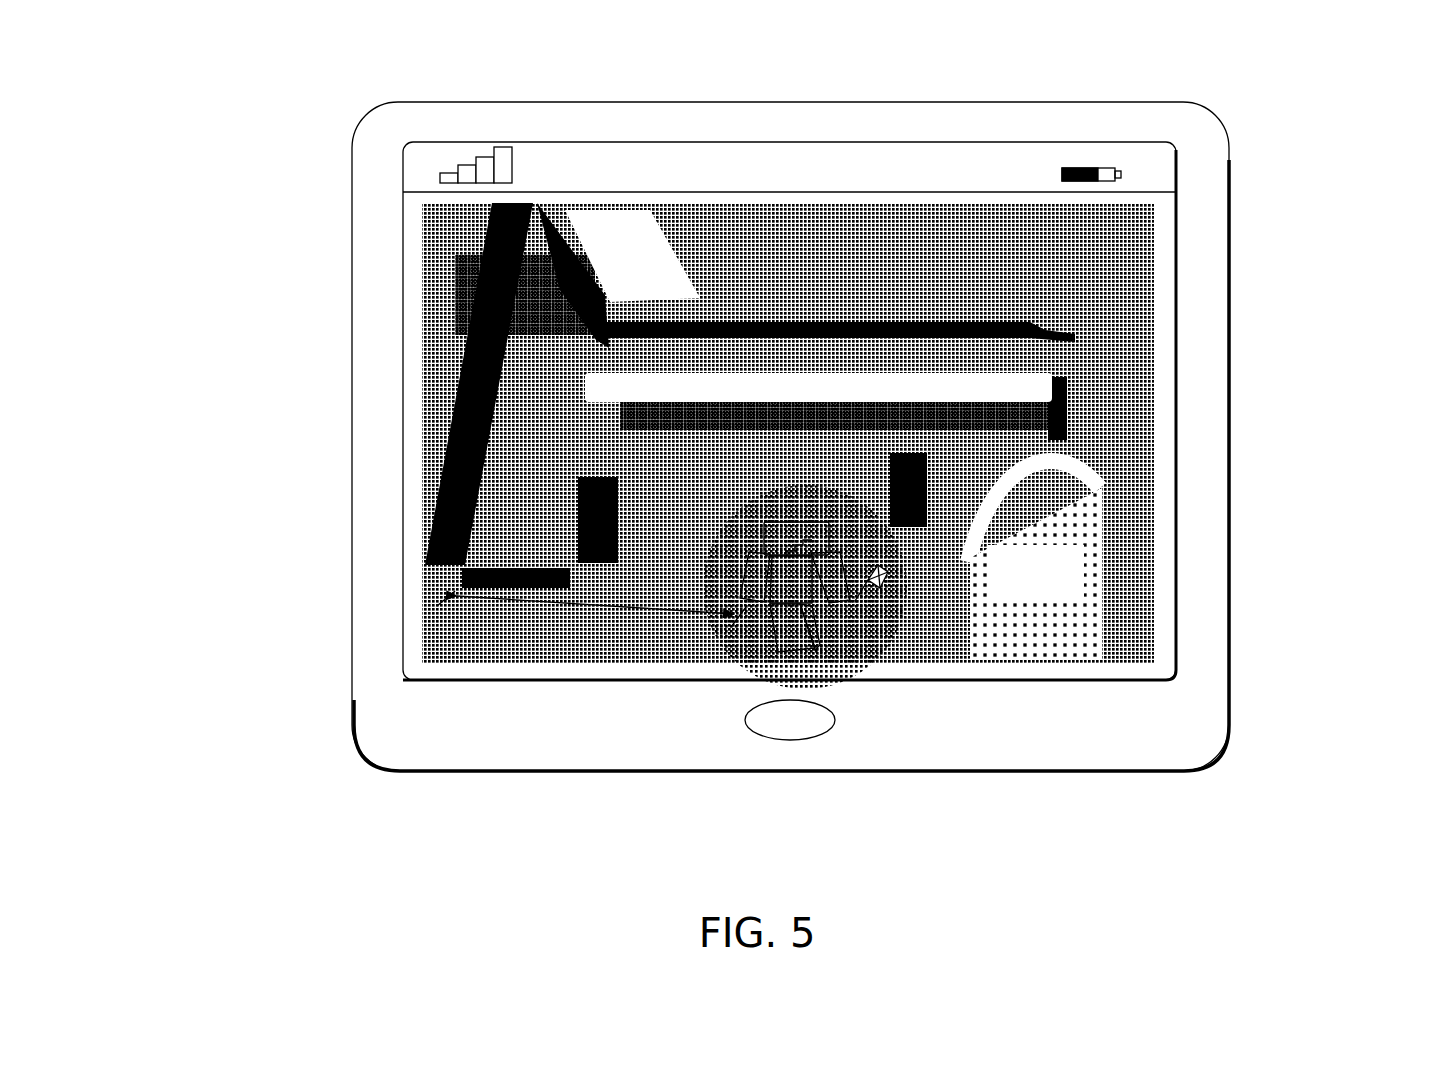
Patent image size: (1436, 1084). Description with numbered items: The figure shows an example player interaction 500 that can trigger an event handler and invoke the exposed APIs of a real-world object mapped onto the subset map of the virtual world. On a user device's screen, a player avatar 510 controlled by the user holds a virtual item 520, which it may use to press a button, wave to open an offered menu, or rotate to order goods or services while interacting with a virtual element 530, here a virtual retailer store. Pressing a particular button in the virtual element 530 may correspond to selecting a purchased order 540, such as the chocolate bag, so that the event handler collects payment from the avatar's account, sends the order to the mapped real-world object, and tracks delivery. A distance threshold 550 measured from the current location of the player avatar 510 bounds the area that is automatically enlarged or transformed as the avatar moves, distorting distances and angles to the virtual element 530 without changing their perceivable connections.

The player interaction 500 is at (178, 118).
The virtual element 530 is at (466, 312).
The player avatar 510 is at (771, 624).
The virtual item 520 is at (863, 604).
The purchased order 540 is at (1108, 564).
The distance threshold 550 is at (591, 623).